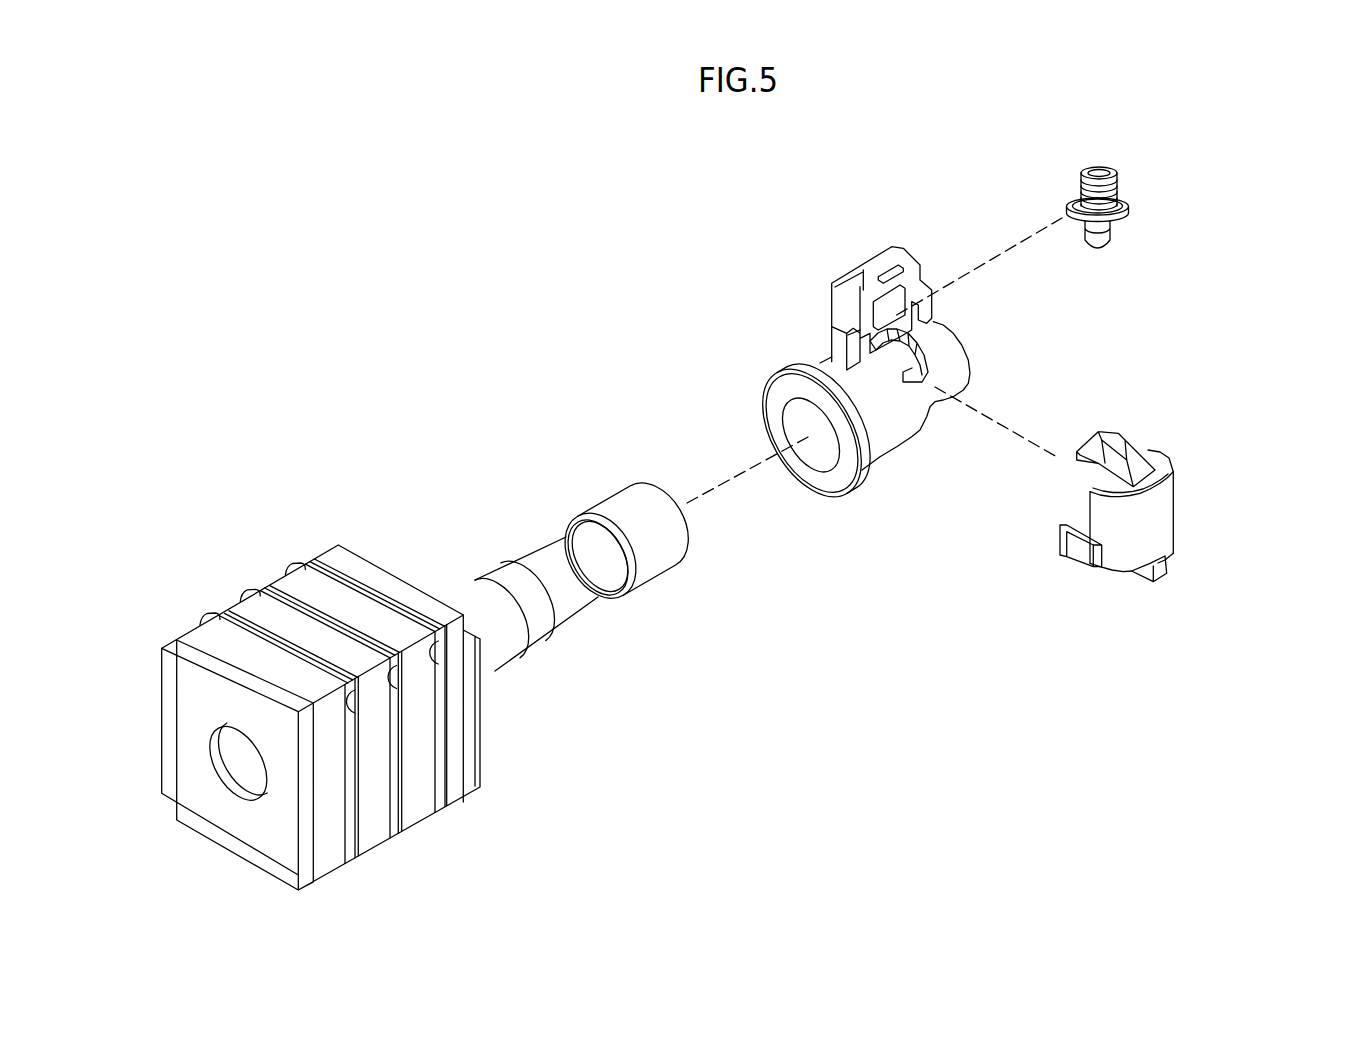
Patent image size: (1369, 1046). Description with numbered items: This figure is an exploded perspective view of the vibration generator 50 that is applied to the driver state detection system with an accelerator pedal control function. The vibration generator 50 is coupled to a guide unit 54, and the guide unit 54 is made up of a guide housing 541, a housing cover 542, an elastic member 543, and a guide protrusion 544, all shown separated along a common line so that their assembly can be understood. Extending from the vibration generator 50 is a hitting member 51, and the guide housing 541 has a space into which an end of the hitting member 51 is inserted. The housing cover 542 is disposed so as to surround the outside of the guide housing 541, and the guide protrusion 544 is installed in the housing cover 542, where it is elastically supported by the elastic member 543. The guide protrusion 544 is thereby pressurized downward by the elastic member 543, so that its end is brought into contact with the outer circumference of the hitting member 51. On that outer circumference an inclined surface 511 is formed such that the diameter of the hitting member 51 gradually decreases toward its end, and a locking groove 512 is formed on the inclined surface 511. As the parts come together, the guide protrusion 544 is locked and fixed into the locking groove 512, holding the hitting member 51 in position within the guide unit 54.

The vibration generator 50 is at (258, 572).
The hitting member 51 is at (581, 561).
The inclined surface 511 is at (567, 607).
The locking groove 512 is at (618, 582).
The guide unit 54 is at (1037, 393).
The guide housing 541 is at (878, 440).
The housing cover 542 is at (1160, 462).
The elastic member 543 is at (1117, 188).
The guide protrusion 544 is at (1098, 244).